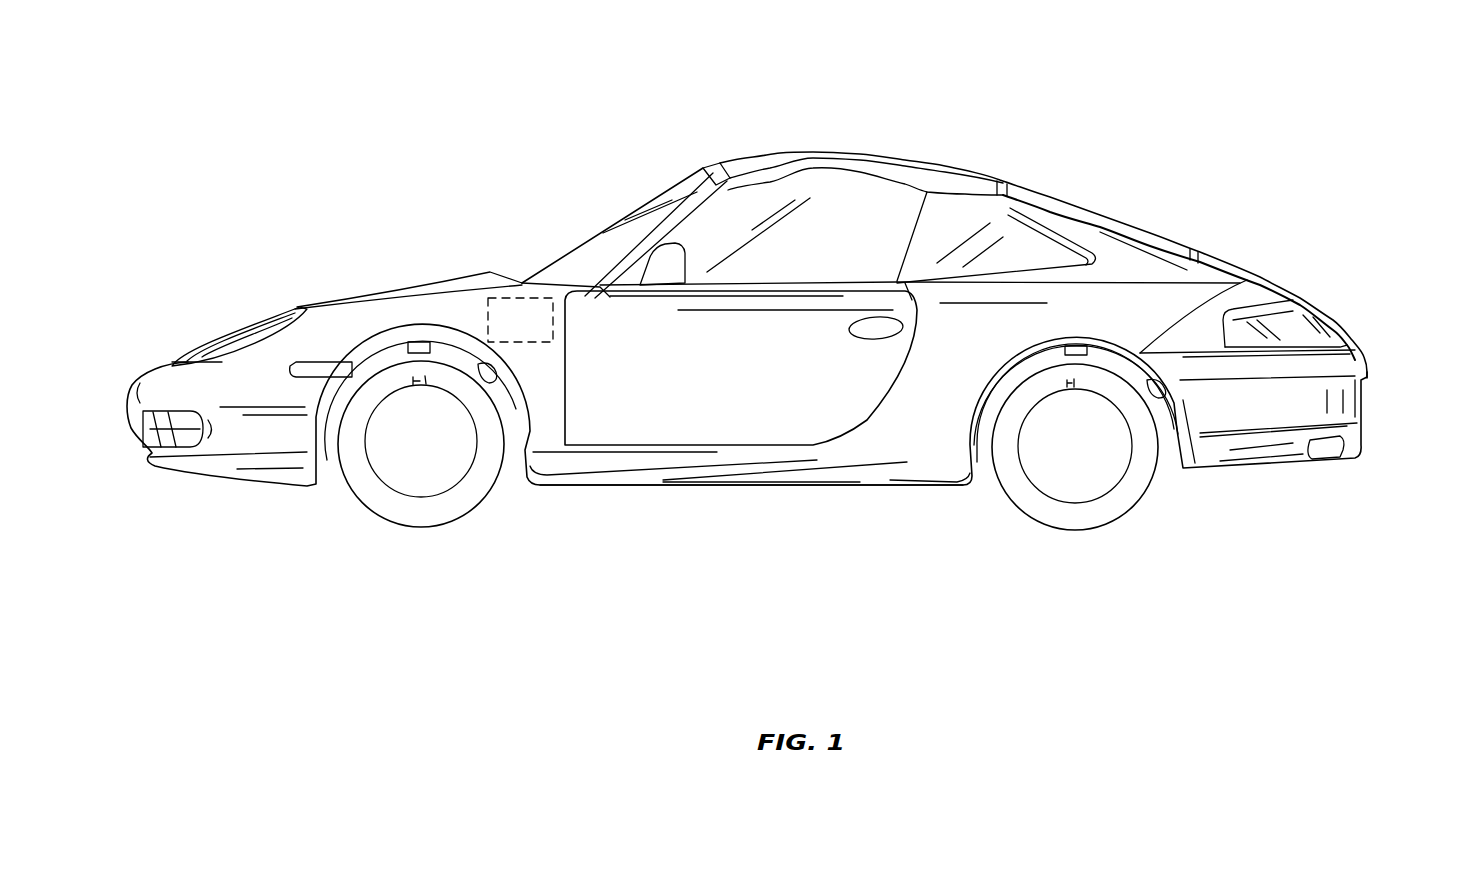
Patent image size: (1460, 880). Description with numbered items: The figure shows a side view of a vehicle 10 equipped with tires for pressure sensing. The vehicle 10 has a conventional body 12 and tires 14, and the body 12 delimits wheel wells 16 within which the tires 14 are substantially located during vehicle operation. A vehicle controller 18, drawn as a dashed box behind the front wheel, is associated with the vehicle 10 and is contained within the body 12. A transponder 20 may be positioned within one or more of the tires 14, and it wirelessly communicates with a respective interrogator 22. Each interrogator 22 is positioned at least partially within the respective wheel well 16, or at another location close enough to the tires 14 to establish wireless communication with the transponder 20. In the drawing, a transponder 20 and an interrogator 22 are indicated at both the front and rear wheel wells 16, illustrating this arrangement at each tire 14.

The vehicle 10 is at (783, 290).
The body 12 is at (685, 487).
The tires 14 is at (463, 512).
The wheel wells 16 is at (497, 383).
The vehicle controller 18 is at (526, 298).
The transponder 20 is at (410, 377).
The interrogator 22 is at (419, 342).